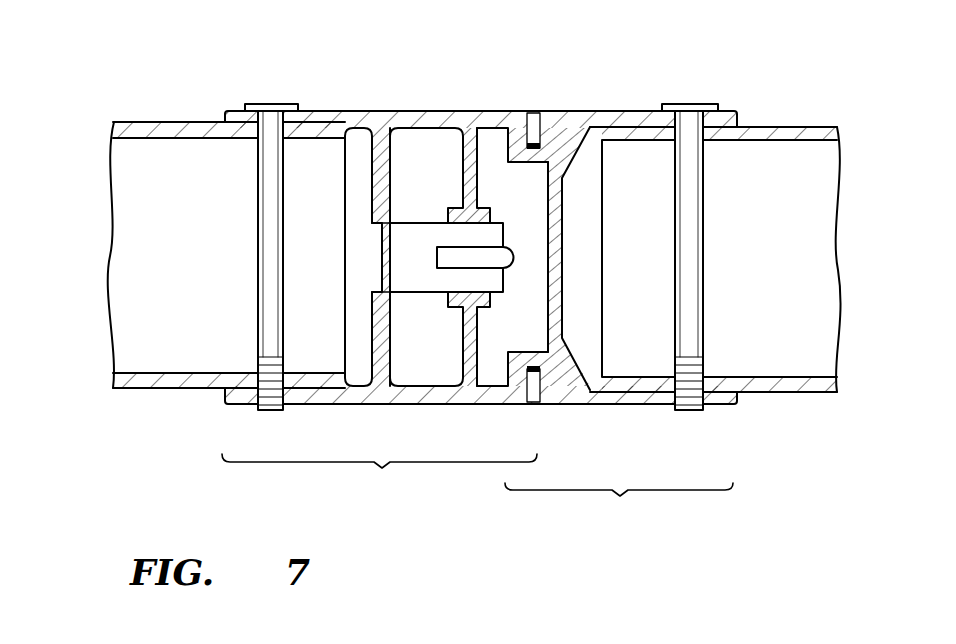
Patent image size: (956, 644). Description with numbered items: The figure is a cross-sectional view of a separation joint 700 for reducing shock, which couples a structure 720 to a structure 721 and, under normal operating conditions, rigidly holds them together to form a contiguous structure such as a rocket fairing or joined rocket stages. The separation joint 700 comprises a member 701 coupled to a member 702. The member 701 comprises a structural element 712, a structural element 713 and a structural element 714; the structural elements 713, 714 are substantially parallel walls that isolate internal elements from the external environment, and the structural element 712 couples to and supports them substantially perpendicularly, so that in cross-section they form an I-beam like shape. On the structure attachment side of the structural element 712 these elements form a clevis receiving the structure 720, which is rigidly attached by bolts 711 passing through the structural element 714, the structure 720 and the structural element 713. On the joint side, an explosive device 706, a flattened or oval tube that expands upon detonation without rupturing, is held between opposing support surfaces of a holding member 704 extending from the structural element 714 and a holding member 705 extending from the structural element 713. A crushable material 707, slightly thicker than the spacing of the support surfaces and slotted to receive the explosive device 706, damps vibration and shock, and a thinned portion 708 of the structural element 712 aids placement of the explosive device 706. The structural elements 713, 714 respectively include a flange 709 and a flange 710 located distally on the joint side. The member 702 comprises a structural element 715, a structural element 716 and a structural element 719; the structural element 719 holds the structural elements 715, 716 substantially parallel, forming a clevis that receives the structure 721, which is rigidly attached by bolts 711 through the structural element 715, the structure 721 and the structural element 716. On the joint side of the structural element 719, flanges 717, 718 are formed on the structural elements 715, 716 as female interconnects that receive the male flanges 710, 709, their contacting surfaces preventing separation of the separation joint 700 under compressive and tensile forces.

The separation joint 700 is at (456, 73).
The member 701 is at (379, 314).
The member 702 is at (619, 329).
The holding member 704 is at (468, 170).
The holding member 705 is at (467, 335).
The explosive device 706 is at (507, 254).
The crushable material 707 is at (400, 243).
The thinned portion 708 is at (386, 270).
The flange 709 is at (532, 388).
The flange 710 is at (535, 135).
The bolts 711 is at (272, 103).
The structural element 712 is at (376, 332).
The structural element 713 is at (438, 400).
The structural element 714 is at (347, 114).
The structural element 715 is at (628, 113).
The structural element 716 is at (633, 397).
The flange 717 is at (534, 163).
The flange 718 is at (528, 354).
The structural element 719 is at (558, 288).
The structure 720 is at (160, 123).
The structure 721 is at (800, 128).